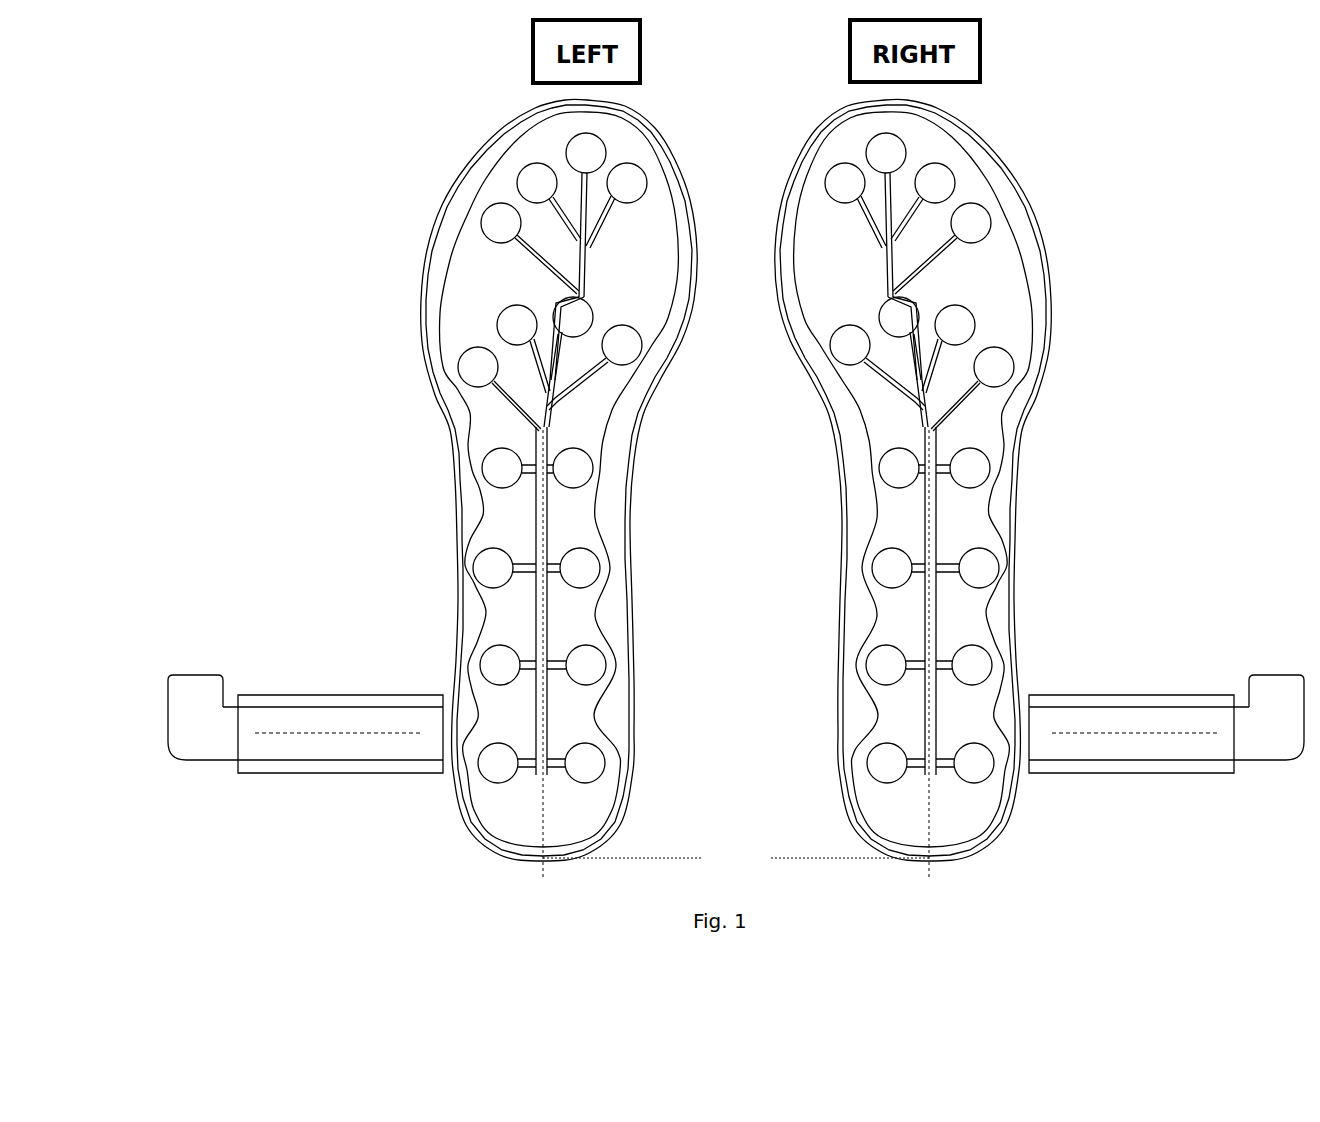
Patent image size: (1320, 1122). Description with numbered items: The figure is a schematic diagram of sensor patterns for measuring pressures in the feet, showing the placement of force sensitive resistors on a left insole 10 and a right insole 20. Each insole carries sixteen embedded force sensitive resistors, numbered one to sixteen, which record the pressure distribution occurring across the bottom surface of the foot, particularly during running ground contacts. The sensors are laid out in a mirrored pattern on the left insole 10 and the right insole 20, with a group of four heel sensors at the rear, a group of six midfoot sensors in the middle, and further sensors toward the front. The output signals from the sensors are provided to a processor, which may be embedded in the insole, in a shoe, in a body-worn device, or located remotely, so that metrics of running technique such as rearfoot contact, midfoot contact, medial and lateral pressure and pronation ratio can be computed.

The left insole 10 is at (402, 151).
The right insole 20 is at (1049, 155).